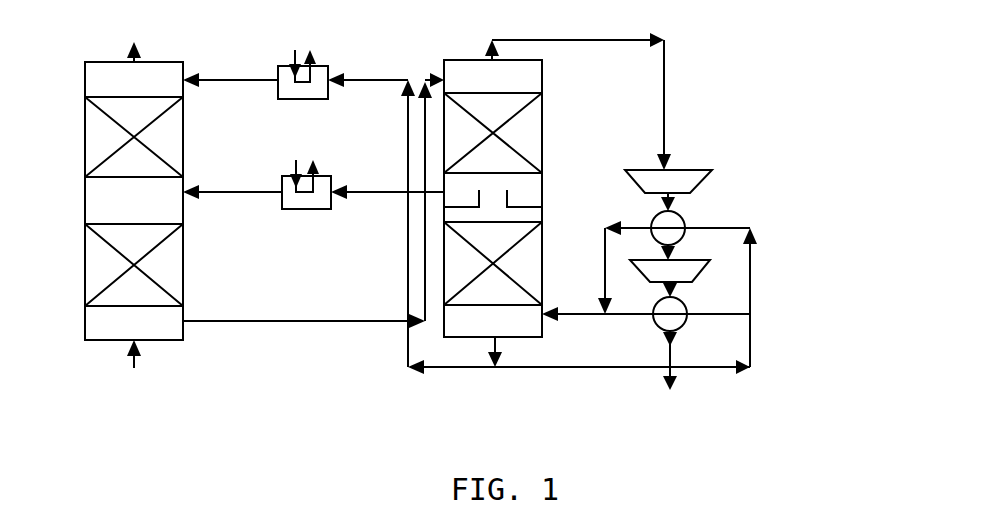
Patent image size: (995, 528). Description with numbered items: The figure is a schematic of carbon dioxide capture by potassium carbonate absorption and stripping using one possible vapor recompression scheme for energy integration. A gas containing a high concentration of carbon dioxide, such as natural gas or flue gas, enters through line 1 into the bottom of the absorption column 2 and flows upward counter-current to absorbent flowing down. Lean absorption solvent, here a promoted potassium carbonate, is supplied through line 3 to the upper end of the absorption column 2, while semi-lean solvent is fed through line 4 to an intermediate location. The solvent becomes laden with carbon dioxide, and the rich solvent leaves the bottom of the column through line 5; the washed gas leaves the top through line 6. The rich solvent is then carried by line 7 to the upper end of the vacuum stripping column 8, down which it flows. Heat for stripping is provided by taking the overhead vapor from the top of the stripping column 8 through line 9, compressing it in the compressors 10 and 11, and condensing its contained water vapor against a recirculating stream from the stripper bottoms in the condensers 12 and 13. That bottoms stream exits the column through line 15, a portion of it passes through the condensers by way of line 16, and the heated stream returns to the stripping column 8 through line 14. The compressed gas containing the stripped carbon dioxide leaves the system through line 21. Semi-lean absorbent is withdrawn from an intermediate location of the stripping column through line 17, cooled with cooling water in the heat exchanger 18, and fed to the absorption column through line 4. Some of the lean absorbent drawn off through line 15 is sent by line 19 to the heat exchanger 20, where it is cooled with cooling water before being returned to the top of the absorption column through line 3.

The line 1 is at (130, 362).
The absorption column 2 is at (83, 204).
The line 3 is at (204, 84).
The line 4 is at (208, 196).
The line 5 is at (200, 323).
The line 6 is at (130, 60).
The line 7 is at (426, 86).
The vacuum stripping column 8 is at (543, 141).
The line 9 is at (490, 56).
The compressor 10 is at (704, 181).
The compressor 11 is at (704, 272).
The condenser 12 is at (686, 218).
The condenser 13 is at (690, 320).
The line 14 is at (582, 312).
The line 15 is at (498, 340).
The line 16 is at (588, 369).
The line 17 is at (372, 196).
The heat exchanger 18 is at (306, 214).
The line 19 is at (378, 84).
The heat exchanger 20 is at (298, 100).
The line 21 is at (682, 372).